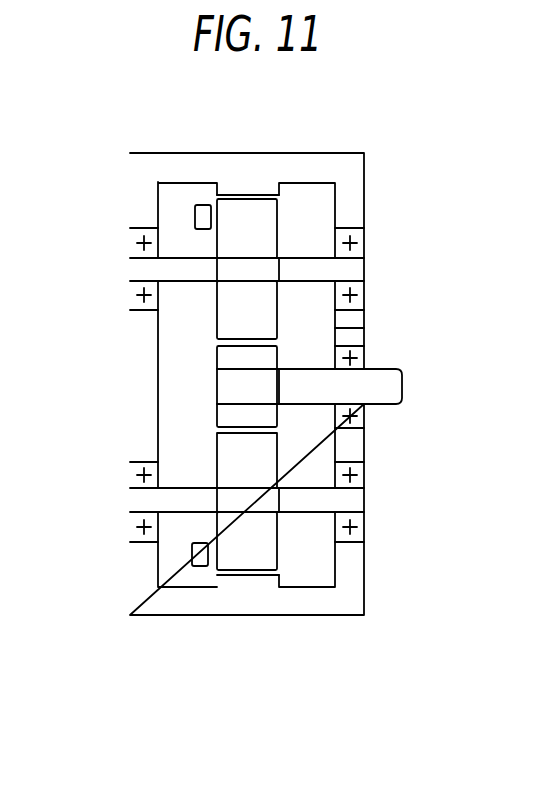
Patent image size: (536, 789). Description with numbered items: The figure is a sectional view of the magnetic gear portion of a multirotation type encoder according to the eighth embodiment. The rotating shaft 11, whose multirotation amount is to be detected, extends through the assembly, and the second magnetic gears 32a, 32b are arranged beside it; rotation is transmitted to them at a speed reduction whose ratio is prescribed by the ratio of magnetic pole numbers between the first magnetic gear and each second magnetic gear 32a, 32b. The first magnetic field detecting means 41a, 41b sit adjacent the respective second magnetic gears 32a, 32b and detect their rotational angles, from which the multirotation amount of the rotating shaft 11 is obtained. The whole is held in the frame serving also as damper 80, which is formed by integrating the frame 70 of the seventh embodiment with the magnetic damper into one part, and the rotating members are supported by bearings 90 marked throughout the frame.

The frame 70 is at (132, 189).
The frame serving also as damper 80 is at (253, 195).
The second magnetic gear 32a is at (280, 218).
The second magnetic gear 32b is at (278, 549).
The rotating shaft 11 is at (396, 390).
The first magnetic field detecting means 41a is at (203, 205).
The first magnetic field detecting means 41b is at (198, 566).
The bearing 90 is at (366, 242).